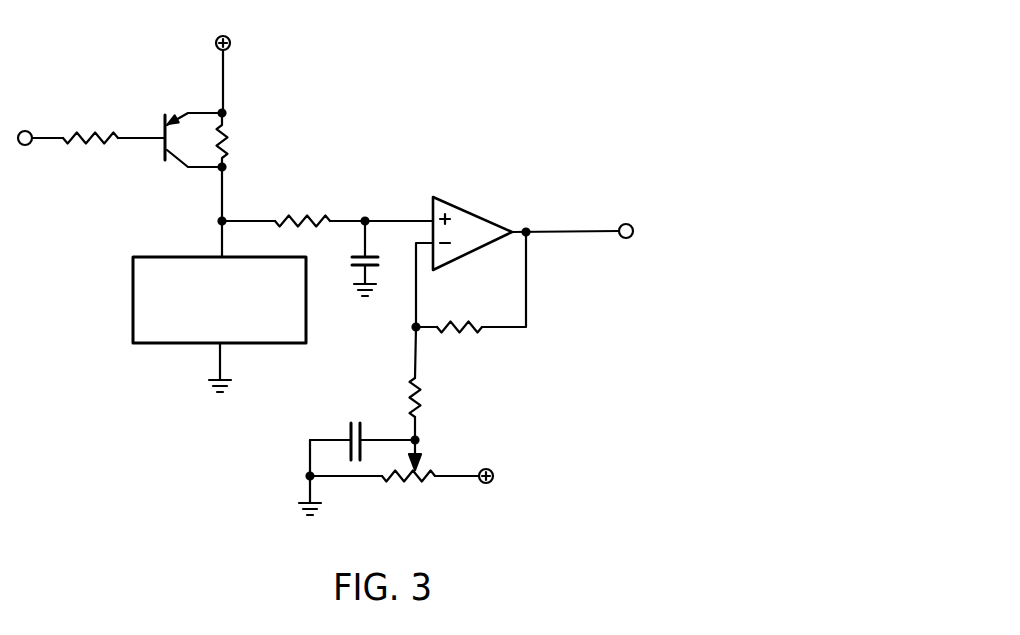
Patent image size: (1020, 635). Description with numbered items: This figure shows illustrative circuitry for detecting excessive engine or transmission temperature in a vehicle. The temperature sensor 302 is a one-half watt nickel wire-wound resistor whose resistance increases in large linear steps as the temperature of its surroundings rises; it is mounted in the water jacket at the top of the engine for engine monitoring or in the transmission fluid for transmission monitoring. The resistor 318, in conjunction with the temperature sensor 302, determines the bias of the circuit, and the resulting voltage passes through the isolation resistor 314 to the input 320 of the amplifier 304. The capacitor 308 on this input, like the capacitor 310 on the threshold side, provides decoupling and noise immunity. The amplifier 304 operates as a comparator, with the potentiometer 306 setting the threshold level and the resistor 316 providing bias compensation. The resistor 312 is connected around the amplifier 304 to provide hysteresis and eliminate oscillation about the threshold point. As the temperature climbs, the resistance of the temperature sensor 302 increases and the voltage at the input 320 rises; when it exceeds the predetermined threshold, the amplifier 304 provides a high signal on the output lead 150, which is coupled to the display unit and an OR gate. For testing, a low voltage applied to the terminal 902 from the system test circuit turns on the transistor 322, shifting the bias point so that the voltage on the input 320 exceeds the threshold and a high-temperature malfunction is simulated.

The terminal 902 is at (45, 90).
The transistor 322 is at (176, 120).
The resistor 318 is at (228, 146).
The temperature sensor 302 is at (133, 318).
The resistor 314 is at (296, 215).
The input 320 is at (418, 220).
The capacitor 308 is at (364, 257).
The amplifier 304 is at (457, 203).
The output lead 150 is at (587, 232).
The resistor 312 is at (448, 320).
The resistor 316 is at (426, 406).
The capacitor 310 is at (350, 425).
The potentiometer 306 is at (418, 480).